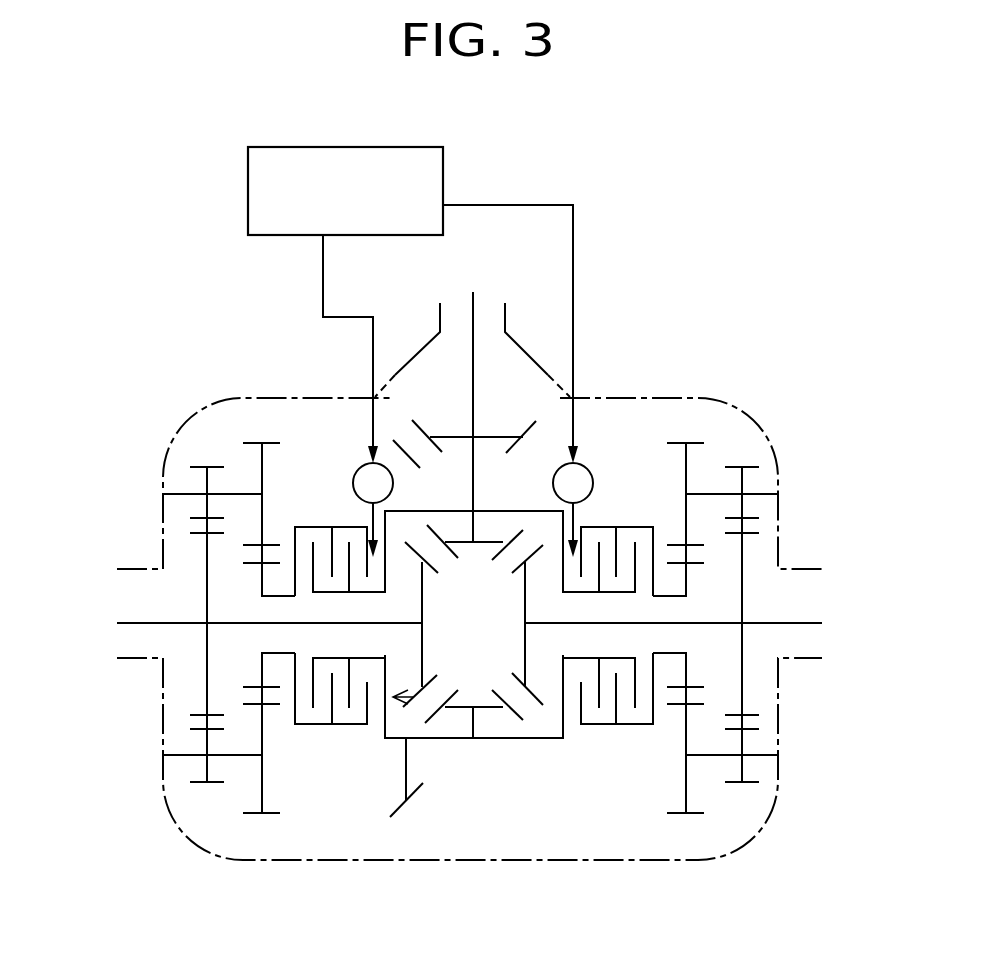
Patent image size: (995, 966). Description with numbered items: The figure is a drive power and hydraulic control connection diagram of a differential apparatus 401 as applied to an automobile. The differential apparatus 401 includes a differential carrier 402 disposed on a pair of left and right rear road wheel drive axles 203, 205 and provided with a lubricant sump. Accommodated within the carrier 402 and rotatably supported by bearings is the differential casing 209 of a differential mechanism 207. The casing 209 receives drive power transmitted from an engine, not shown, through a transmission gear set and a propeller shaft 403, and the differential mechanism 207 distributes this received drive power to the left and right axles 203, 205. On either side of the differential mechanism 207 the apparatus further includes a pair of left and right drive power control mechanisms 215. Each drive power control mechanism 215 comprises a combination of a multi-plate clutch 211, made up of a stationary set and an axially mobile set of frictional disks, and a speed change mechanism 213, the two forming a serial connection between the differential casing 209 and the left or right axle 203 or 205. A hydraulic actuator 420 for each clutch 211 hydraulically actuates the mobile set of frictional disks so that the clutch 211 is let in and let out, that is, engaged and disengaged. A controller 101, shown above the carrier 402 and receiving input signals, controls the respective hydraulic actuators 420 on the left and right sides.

The controller 101 is at (318, 146).
The differential apparatus 401 is at (662, 212).
The differential carrier 402 is at (347, 862).
The propeller shaft 403 is at (475, 320).
The left rear road wheel drive axle 203 is at (130, 622).
The right rear road wheel drive axle 205 is at (800, 622).
The differential mechanism 207 is at (514, 762).
The differential casing 209 is at (435, 510).
The multi-plate clutch 211 is at (330, 527).
The speed change mechanism 213 is at (243, 492).
The drive power control mechanism 215 is at (281, 420).
The hydraulic actuator 420 is at (352, 467).